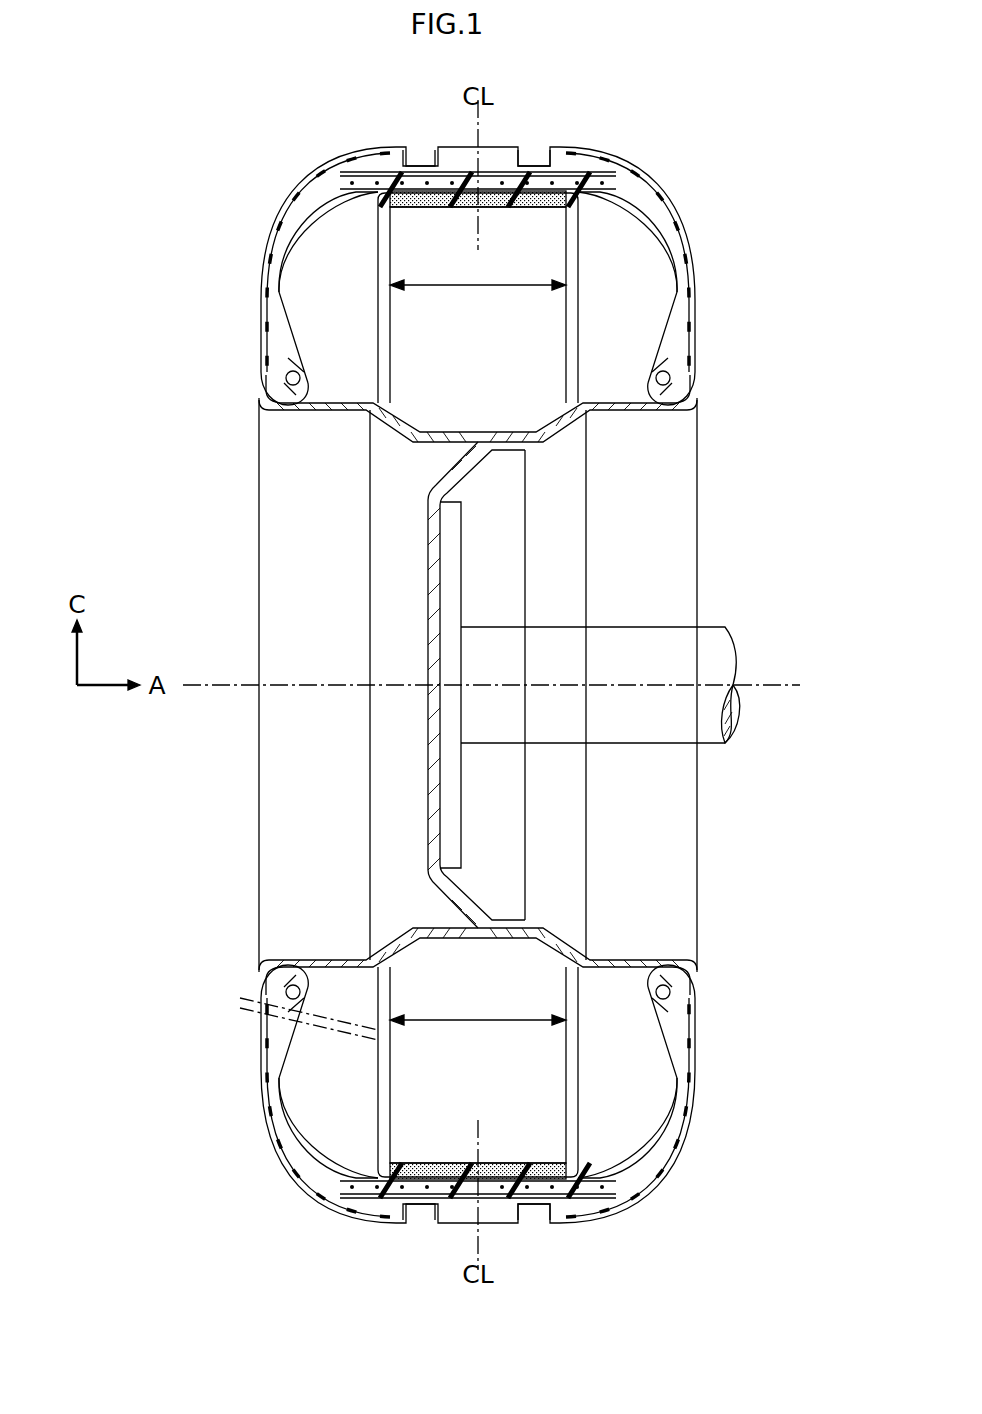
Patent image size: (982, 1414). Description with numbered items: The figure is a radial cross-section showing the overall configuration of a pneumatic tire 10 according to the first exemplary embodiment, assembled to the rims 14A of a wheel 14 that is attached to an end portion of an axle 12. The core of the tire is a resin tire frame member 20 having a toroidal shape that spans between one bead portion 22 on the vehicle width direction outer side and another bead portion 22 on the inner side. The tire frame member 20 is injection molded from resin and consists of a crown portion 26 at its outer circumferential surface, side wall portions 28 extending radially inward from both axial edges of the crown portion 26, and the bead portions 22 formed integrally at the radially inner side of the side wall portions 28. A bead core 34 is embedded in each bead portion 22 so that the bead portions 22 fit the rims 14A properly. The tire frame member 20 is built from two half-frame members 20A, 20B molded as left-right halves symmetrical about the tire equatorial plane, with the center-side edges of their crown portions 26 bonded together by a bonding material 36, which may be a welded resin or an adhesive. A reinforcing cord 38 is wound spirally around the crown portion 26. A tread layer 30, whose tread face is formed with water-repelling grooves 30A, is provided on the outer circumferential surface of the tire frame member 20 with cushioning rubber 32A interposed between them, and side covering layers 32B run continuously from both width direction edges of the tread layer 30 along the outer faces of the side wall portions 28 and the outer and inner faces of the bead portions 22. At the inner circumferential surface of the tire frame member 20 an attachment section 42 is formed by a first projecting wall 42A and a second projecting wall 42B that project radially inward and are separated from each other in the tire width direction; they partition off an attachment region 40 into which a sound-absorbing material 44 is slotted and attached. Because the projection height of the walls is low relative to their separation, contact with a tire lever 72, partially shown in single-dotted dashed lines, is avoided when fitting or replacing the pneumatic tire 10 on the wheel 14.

The pneumatic tire 10 is at (660, 168).
The axle 12 is at (734, 652).
The wheel 14 is at (479, 686).
The rim 14A is at (286, 380).
The tire frame member 20 is at (477, 685).
The half-frame member 20A is at (268, 226).
The half-frame member 20B is at (690, 235).
The bead portion 22 is at (286, 364).
The crown portion 26 is at (366, 192).
The side wall portion 28 is at (281, 294).
The tread layer 30 is at (478, 685).
The water-repelling groove 30A is at (430, 164).
The cushioning rubber 32A is at (556, 173).
The side covering layer 32B is at (262, 290).
The bead core 34 is at (268, 398).
The bonding material 36 is at (493, 172).
The reinforcing cord 38 is at (352, 181).
The attachment region 40 is at (478, 652).
The attachment section 42 is at (478, 685).
The first projecting wall 42A is at (392, 322).
The second projecting wall 42B is at (528, 685).
The sound-absorbing material 44 is at (452, 205).
The tire lever 72 is at (346, 1022).